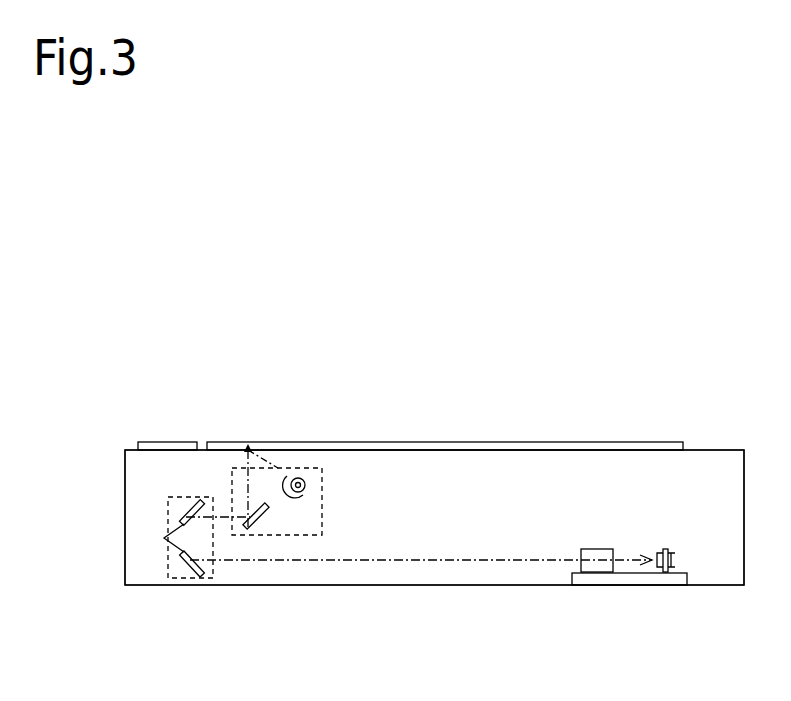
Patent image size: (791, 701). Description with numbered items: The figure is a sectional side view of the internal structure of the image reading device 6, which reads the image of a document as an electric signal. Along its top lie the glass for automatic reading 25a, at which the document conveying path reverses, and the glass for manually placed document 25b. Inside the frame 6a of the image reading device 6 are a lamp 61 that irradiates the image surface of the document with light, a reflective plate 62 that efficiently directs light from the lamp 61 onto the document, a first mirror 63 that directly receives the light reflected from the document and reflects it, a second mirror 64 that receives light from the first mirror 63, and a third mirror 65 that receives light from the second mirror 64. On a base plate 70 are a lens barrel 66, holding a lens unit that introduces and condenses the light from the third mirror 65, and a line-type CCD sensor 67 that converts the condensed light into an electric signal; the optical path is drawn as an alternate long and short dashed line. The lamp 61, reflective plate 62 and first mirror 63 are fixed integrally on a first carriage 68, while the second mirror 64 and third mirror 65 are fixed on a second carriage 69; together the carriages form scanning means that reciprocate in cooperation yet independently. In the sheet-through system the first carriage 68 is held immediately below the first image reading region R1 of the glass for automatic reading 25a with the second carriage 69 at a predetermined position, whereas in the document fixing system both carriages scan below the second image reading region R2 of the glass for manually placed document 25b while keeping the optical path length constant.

The image reading device 6 is at (157, 365).
The frame 6a is at (125, 500).
The glass for automatic reading 25a is at (158, 450).
The glass for manually placed document 25b is at (483, 445).
The first image reading region R1 is at (197, 488).
The second image reading region R2 is at (510, 455).
The lamp 61 is at (305, 483).
The reflective plate 62 is at (303, 495).
The first mirror 63 is at (258, 517).
The second mirror 64 is at (188, 517).
The third mirror 65 is at (187, 567).
The lens barrel 66 is at (595, 551).
The CCD sensor 67 is at (667, 549).
The first carriage 68 is at (320, 527).
The second carriage 69 is at (187, 578).
The base plate 70 is at (683, 578).